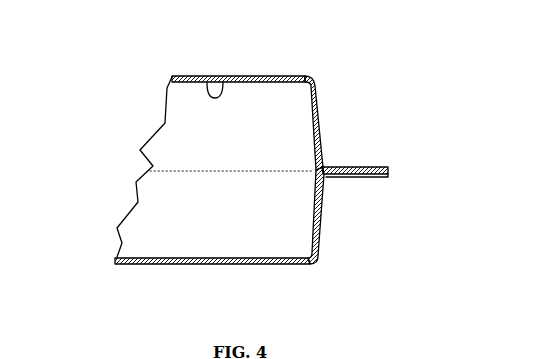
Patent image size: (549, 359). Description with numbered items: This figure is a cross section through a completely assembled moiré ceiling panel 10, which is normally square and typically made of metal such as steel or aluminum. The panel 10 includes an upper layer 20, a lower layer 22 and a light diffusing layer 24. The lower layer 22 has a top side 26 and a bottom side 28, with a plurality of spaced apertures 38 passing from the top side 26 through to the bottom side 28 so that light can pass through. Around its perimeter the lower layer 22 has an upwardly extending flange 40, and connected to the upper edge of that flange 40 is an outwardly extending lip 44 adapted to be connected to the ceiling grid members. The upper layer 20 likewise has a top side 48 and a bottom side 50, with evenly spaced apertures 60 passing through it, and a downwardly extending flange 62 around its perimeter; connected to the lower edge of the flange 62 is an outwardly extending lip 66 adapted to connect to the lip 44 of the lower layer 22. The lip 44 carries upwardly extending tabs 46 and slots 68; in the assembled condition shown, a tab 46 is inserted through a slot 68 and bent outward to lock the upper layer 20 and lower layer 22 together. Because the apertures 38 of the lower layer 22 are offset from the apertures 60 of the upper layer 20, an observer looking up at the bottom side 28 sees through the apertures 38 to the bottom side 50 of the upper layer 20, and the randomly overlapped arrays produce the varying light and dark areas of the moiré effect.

The moiré ceiling panel 10 is at (405, 53).
The upper layer 20 is at (314, 80).
The lower layer 22 is at (300, 266).
The light diffusing layer 24 is at (263, 76).
The top side 26 is at (167, 257).
The bottom side 28 is at (180, 265).
The apertures 38 is at (268, 266).
The upwardly extending flange 40 is at (322, 220).
The outwardly extending lip 44 is at (372, 177).
The upwardly extending tabs 46 is at (367, 167).
The top side 48 is at (172, 77).
The bottom side 50 is at (180, 82).
The apertures 60 is at (225, 76).
The downwardly extending flange 62 is at (320, 112).
The outwardly extending lip 66 is at (388, 172).
The slots 68 is at (325, 172).